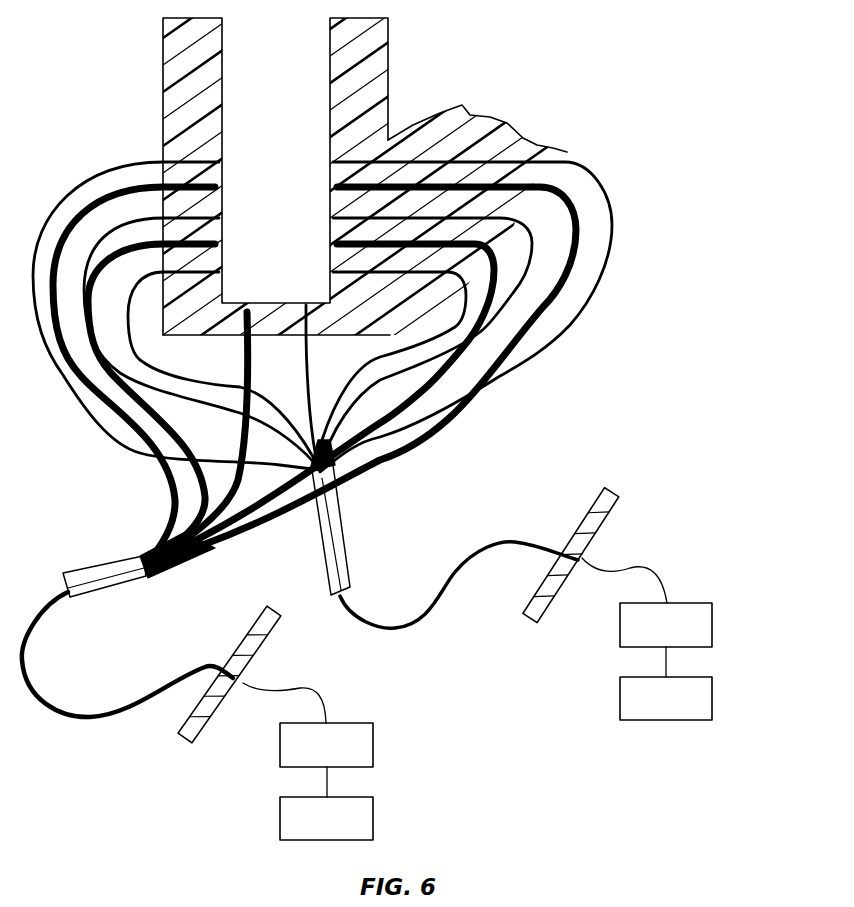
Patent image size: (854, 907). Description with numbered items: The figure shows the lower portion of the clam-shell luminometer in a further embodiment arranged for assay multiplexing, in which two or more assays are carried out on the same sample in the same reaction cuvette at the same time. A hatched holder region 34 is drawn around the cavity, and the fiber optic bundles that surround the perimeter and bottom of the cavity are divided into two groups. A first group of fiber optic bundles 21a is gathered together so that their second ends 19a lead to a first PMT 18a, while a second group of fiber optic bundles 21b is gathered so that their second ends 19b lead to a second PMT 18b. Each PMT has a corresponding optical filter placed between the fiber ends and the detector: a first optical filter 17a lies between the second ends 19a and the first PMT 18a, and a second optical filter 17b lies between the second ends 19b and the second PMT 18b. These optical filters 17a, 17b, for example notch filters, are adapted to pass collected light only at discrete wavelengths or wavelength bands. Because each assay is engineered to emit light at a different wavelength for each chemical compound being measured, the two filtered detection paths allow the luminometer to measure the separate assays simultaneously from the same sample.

The probe holder 34 is at (522, 150).
The first group of fiber optic bundles 21a is at (295, 529).
The second group of fiber optic bundles 21b is at (184, 565).
The second ends of the first group of fiber optic bundles 19a is at (447, 612).
The second ends of the second group of fiber optic bundles 19b is at (97, 718).
The first optical filter 17a is at (713, 623).
The first PMT 18a is at (713, 700).
The second optical filter 17b is at (373, 743).
The second PMT 18b is at (373, 818).